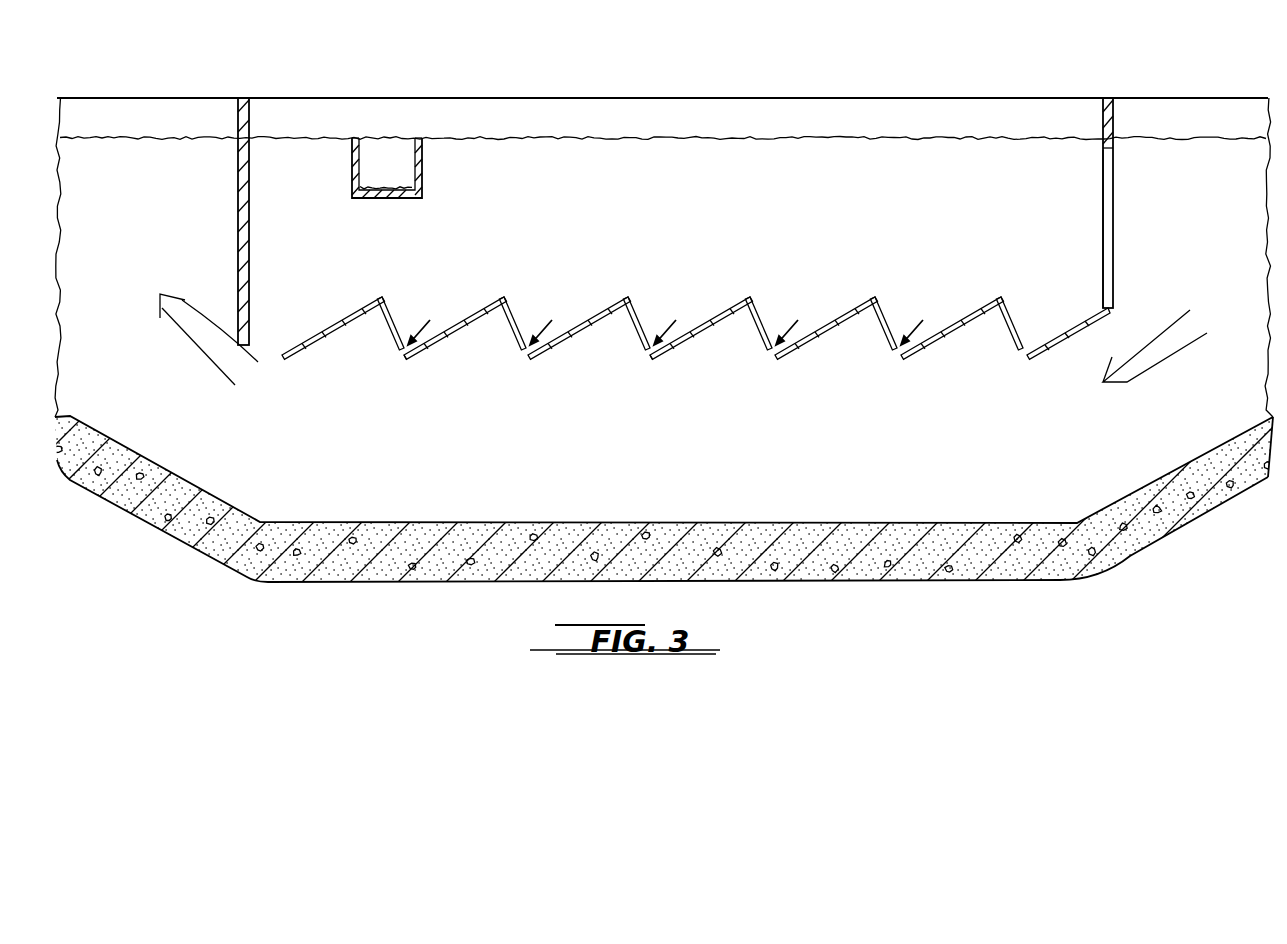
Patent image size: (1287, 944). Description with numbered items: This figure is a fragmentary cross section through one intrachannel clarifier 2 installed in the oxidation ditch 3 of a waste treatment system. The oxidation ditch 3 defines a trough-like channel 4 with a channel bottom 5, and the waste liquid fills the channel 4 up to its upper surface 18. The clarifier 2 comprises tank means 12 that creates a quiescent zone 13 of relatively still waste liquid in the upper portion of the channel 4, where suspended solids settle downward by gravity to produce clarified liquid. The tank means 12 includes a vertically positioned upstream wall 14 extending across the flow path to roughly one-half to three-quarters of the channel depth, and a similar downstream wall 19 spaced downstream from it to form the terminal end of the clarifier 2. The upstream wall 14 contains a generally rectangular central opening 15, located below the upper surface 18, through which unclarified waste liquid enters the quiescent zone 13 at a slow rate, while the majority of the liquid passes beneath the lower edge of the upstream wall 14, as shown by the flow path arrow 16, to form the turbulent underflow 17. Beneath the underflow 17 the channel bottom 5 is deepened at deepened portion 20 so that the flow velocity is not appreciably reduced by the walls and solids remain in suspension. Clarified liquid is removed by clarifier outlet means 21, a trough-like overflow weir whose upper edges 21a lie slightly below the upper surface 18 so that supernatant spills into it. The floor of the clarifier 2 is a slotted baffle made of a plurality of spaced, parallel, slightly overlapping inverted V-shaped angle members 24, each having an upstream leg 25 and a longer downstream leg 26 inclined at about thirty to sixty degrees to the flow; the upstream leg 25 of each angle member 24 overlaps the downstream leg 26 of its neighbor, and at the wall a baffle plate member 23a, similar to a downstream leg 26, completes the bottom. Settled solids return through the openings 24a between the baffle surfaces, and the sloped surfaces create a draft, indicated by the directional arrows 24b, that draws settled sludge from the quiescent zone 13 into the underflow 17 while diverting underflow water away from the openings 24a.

The intrachannel clarifier 2 is at (508, 97).
The oxidation ditch 3 is at (115, 98).
The channel 4 is at (1192, 213).
The channel bottom 5 is at (1195, 516).
The tank means 12 is at (655, 98).
The quiescent zone 13 is at (692, 194).
The upstream wall 14 is at (1112, 98).
The central opening 15 is at (1112, 185).
The flow path arrow 16 is at (1165, 330).
The underflow 17 is at (727, 466).
The upper surface of the waste liquid 18 is at (1180, 138).
The downstream wall 19 is at (238, 212).
The deepened portion 20 is at (906, 582).
The clarifier outlet means 21 is at (352, 168).
The upper edges of clarifier outlet means 21a is at (354, 138).
The baffle plate member 23a is at (1075, 325).
The angle member 24 is at (302, 346).
The openings between baffle surfaces 24a is at (412, 343).
The directional arrows 24b is at (404, 357).
The upstream leg 25 is at (396, 320).
The downstream leg 26 is at (336, 322).